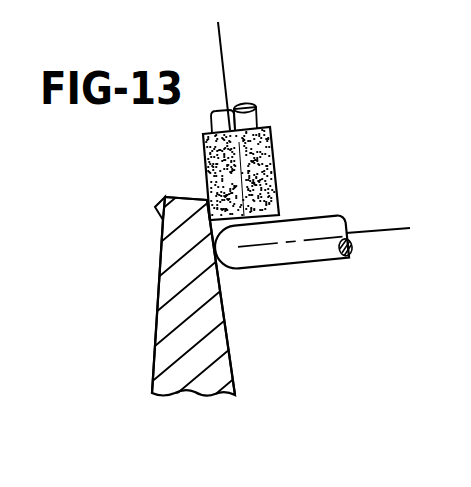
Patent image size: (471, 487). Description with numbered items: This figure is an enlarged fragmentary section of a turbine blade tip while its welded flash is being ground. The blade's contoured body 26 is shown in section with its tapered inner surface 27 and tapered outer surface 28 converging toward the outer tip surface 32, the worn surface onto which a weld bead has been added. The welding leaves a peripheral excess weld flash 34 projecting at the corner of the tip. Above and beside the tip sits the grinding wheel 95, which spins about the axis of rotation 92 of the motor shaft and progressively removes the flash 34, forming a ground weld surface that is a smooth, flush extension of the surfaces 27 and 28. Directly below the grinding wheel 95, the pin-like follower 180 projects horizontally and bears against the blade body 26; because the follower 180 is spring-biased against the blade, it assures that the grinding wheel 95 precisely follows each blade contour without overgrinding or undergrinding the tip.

The body 26 is at (157, 322).
The tapered inner surface 27 is at (230, 322).
The tapered outer surface 28 is at (157, 283).
The outer tip surface 32 is at (186, 194).
The peripheral excess weld flash 34 is at (157, 208).
The axis of rotation 92 is at (223, 49).
The grinding wheel 95 is at (278, 155).
The follower 180 is at (302, 258).